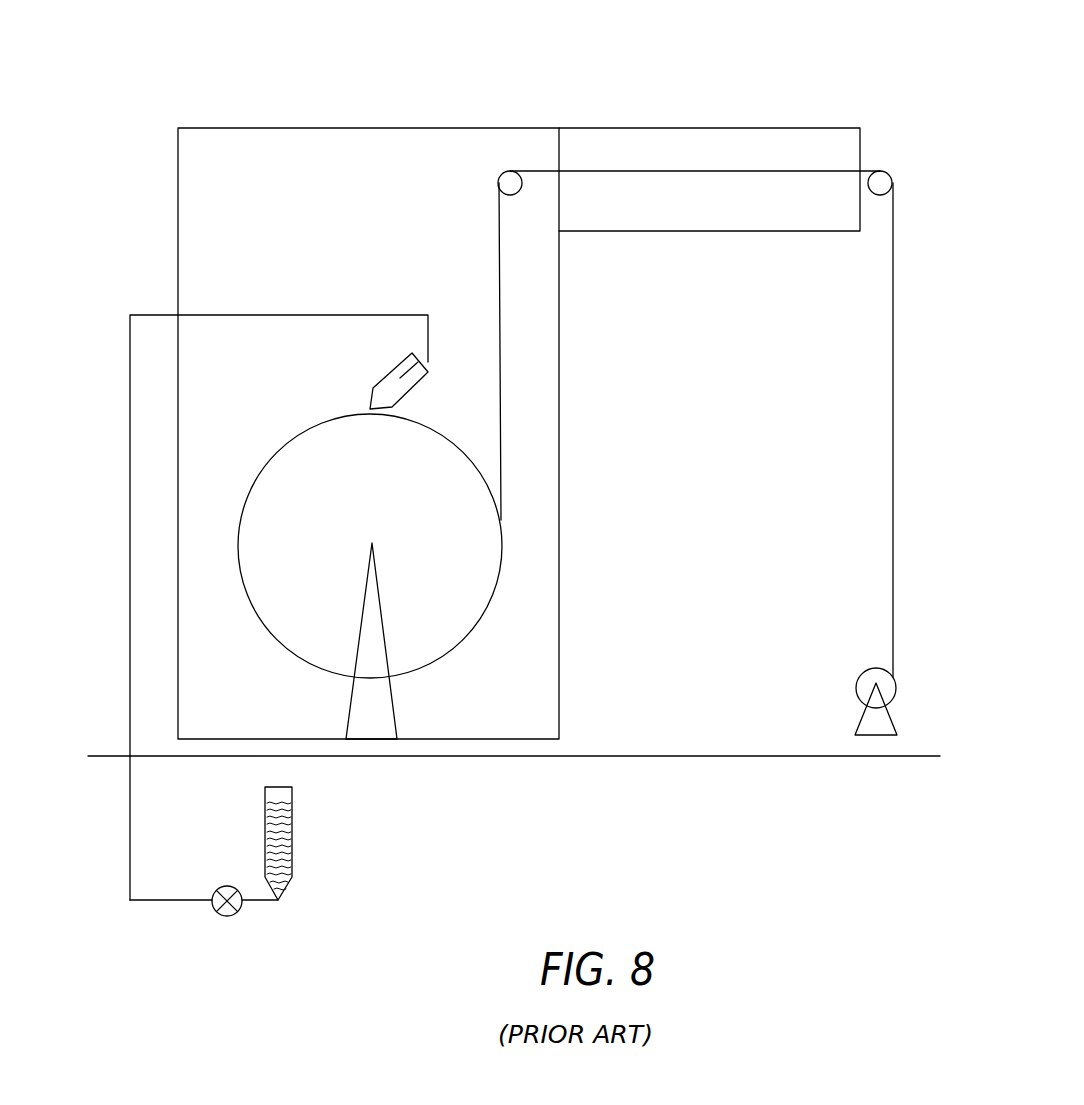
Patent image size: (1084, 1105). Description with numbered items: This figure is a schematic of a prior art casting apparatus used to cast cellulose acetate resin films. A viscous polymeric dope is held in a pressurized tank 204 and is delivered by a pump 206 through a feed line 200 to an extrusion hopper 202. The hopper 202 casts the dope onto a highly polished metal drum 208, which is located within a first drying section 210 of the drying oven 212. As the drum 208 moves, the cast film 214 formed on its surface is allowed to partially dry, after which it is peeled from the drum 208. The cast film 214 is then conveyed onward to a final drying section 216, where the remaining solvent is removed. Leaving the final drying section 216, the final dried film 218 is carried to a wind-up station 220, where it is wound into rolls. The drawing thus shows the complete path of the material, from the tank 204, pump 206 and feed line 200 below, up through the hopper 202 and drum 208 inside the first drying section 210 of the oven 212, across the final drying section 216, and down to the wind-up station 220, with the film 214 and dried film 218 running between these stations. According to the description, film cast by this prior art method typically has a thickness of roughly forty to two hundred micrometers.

The feed line 200 is at (130, 340).
The extrusion hopper 202 is at (383, 377).
The pressurized tank 204 is at (292, 828).
The pump 206 is at (240, 903).
The metal drum 208 is at (445, 541).
The first drying section 210 is at (288, 207).
The drying oven 212 is at (616, 123).
The cast film 214 is at (499, 262).
The final drying section 216 is at (730, 232).
The final dried film 218 is at (893, 476).
The wind-up station 220 is at (867, 668).